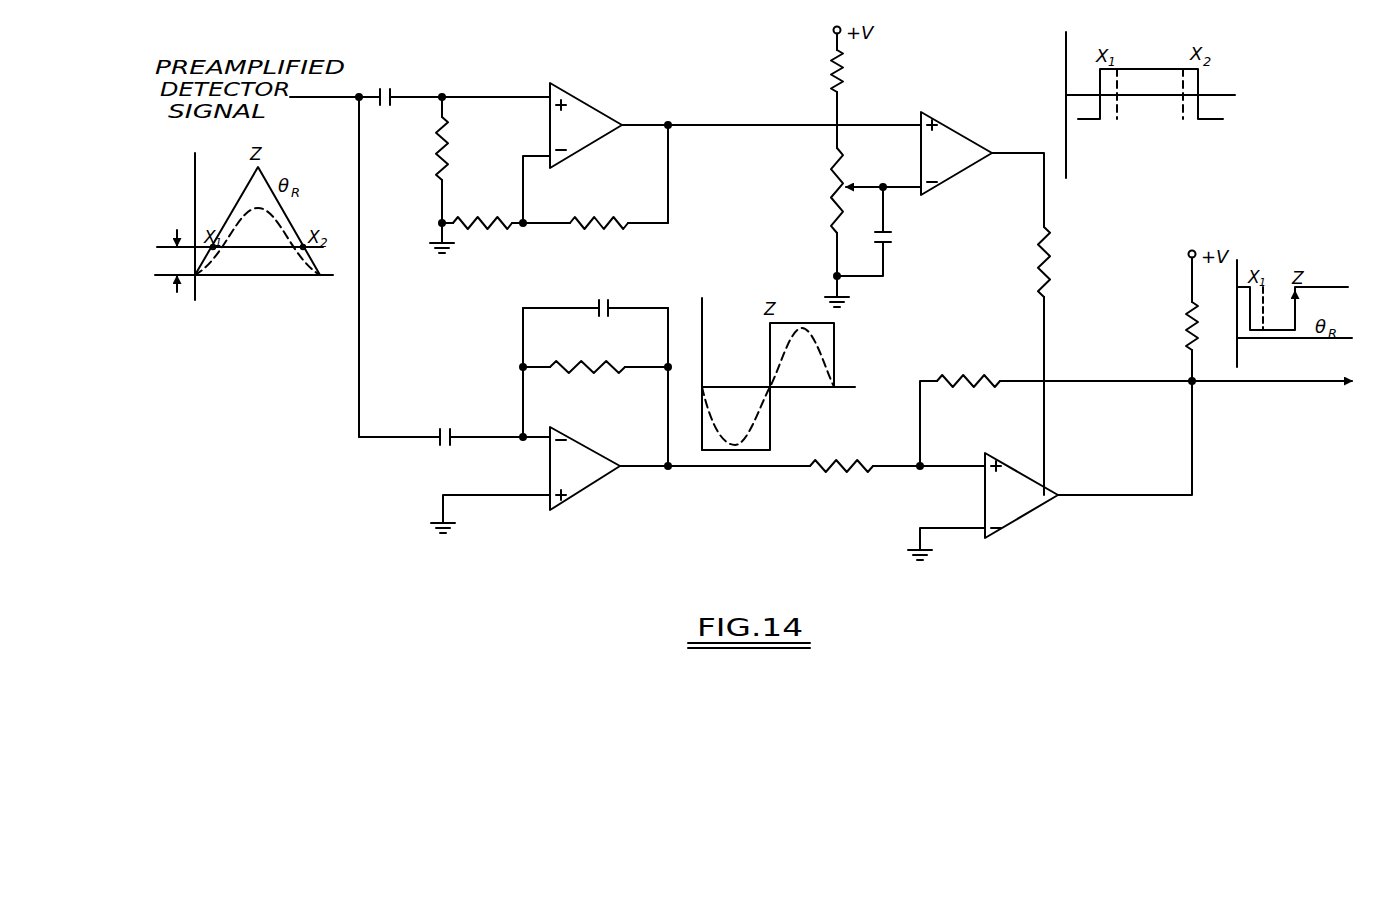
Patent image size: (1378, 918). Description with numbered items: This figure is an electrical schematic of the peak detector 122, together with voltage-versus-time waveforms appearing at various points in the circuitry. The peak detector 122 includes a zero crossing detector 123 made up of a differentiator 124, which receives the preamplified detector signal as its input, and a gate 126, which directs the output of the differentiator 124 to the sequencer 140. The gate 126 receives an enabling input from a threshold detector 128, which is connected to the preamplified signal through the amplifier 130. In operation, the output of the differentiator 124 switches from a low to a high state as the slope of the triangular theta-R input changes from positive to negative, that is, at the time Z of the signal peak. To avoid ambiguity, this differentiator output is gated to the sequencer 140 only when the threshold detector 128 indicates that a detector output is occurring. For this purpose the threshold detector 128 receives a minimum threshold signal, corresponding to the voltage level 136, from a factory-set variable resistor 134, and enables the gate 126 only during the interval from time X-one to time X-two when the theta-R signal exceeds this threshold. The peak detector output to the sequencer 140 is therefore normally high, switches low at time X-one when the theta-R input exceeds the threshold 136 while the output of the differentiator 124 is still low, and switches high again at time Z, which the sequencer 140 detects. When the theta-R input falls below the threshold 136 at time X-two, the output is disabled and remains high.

The peak detector 122 is at (760, 98).
The zero crossing detector 123 is at (718, 508).
The differentiator 124 is at (583, 494).
The gate 126 is at (1021, 532).
The threshold detector 128 is at (987, 108).
The amplifier 130 is at (598, 97).
The variable resistor 134 is at (830, 203).
The threshold voltage level 136 is at (167, 261).
The sequencer 140 is at (1272, 408).